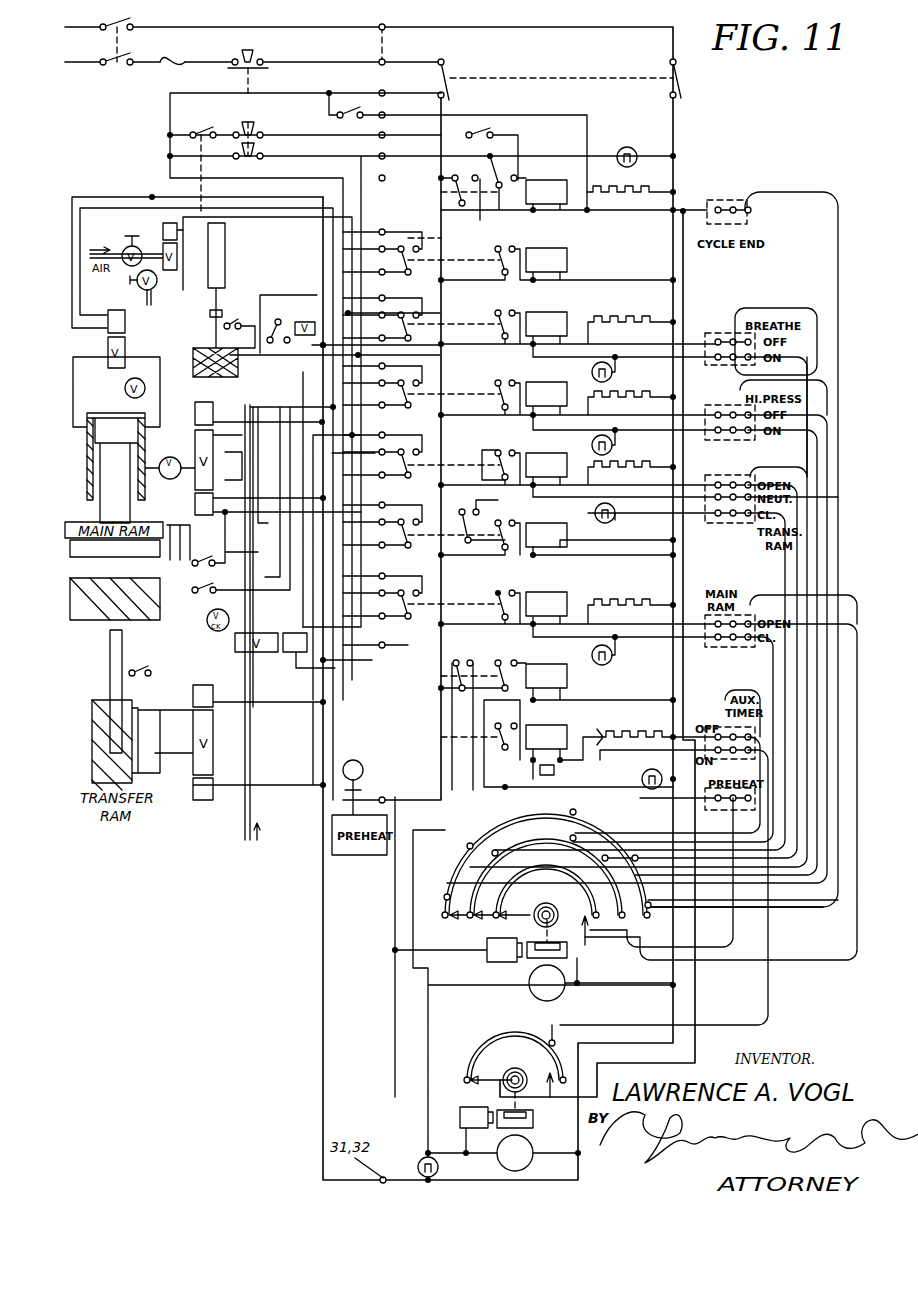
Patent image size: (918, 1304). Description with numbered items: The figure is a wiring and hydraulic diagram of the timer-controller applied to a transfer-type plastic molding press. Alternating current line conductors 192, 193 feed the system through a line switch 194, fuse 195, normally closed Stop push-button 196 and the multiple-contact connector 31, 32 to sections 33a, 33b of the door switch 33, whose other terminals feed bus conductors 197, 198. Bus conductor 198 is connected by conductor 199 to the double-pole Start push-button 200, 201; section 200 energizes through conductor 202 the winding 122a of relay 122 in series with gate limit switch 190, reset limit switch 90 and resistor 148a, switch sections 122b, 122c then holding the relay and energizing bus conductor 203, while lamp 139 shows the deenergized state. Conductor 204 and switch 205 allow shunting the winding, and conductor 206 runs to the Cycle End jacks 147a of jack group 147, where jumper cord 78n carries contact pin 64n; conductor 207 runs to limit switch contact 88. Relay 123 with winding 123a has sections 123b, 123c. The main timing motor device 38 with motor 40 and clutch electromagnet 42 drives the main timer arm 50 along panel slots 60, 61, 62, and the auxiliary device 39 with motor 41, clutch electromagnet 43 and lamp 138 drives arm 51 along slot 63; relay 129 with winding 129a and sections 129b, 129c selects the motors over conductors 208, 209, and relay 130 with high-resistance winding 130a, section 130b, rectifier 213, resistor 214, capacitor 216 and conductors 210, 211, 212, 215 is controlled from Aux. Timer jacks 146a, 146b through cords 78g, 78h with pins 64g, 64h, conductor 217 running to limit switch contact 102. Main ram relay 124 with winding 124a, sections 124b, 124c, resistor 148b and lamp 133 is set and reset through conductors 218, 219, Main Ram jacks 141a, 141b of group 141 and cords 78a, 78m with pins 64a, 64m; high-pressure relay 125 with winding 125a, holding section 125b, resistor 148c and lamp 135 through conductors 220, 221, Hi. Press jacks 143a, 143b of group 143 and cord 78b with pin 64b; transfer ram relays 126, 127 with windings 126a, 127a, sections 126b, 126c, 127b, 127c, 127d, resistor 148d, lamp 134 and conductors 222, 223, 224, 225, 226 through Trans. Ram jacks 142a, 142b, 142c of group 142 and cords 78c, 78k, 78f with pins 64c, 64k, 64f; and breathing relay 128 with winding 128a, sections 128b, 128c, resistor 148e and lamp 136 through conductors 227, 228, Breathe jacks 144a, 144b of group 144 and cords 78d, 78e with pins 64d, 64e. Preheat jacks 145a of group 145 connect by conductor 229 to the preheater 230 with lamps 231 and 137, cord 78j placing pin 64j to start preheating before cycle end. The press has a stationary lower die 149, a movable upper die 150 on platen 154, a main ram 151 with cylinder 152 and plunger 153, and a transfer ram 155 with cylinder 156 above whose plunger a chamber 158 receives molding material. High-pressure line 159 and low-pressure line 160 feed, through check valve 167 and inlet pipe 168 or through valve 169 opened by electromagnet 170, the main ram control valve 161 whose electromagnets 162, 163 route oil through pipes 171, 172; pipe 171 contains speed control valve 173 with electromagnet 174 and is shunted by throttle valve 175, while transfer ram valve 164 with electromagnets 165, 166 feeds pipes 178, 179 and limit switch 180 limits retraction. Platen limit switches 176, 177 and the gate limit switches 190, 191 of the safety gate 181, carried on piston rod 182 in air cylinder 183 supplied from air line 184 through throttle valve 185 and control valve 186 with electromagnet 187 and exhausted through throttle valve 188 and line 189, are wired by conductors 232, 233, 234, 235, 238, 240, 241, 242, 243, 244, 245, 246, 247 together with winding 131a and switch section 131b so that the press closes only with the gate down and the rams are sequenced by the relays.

The multiple-contact connector 31 is at (388, 42).
The multiple-contact connector 32 is at (382, 36).
The door switch 33 is at (602, 76).
The door switch section 33a is at (690, 70).
The door switch section 33b is at (452, 72).
The clutch-type timing motor device 38 is at (572, 958).
The clutch-type timing motor device 39 is at (540, 1124).
The electric motor 40 is at (566, 988).
The electric motor 41 is at (534, 1154).
The clutch electromagnet 42 is at (500, 962).
The clutch electromagnet 43 is at (460, 1120).
The timer arm 50 is at (524, 915).
The timer arm 51 is at (487, 1078).
The panel slot 60 is at (470, 832).
The panel slot 61 is at (495, 818).
The panel slot 62 is at (530, 840).
The panel slot 63 is at (478, 1044).
The contact pin 64a is at (496, 916).
The contact pin 64b is at (445, 915).
The contact pin 64c is at (447, 897).
The contact pin 64d is at (468, 848).
The contact pin 64e is at (493, 855).
The contact pin 64f is at (578, 812).
The contact pin 64g is at (572, 836).
The contact pin 64h is at (552, 1042).
The contact pin 64j is at (604, 858).
The contact pin 64k is at (635, 858).
The contact pin 64m is at (652, 830).
The contact pin 64n is at (648, 916).
The jumper cord 78a is at (772, 640).
The jumper cord 78b is at (775, 430).
The jumper cord 78c is at (755, 540).
The jumper cord 78d is at (796, 378).
The jumper cord 78e is at (722, 300).
The jumper cord 78f is at (846, 495).
The jumper cord 78g is at (770, 660).
The jumper cord 78h is at (748, 690).
The jumper cord 78j is at (742, 938).
The jumper cord 78k is at (798, 432).
The jumper cord 78m is at (772, 594).
The jumper cord 78n is at (800, 190).
The limit switch contact 88 is at (576, 935).
The reset limit switch 90 is at (500, 128).
The limit switch contact 102 is at (552, 1092).
The relay 122 is at (566, 180).
The relay winding 122a is at (560, 206).
The relay switch section 122b is at (500, 207).
The relay switch section 122c is at (452, 190).
The relay 123 is at (526, 250).
The relay winding 123a is at (567, 258).
The relay switch section 123b is at (498, 249).
The relay switch section 123c is at (416, 270).
The relay 124 is at (545, 592).
The relay winding 124a is at (574, 600).
The relay switch section 124b is at (498, 593).
The relay switch section 124c is at (420, 612).
The relay 125 is at (540, 384).
The relay winding 125a is at (580, 378).
The relay switch section 125b is at (498, 383).
The relay 126 is at (540, 454).
The relay winding 126a is at (568, 460).
The relay switch section 126b is at (498, 453).
The relay switch section 126c is at (416, 475).
The relay 127 is at (540, 540).
The relay winding 127a is at (567, 525).
The relay switch section 127b is at (505, 547).
The relay switch section 127c is at (462, 511).
The relay switch section 127d is at (420, 550).
The relay 128 is at (527, 312).
The relay winding 128a is at (567, 320).
The relay switch section 128b is at (498, 313).
The relay switch section 128c is at (416, 336).
The relay 129 is at (562, 666).
The relay winding 129a is at (567, 680).
The relay switch section 129b is at (498, 662).
The relay switch section 129c is at (458, 662).
The relay 130 is at (556, 728).
The relay winding 130a is at (567, 733).
The relay switch section 130b is at (533, 762).
The relay winding 131a is at (284, 318).
The relay switch section 131b is at (268, 330).
The indicator lamp 133 is at (612, 658).
The indicator lamp 134 is at (370, 480).
The indicator lamp 135 is at (613, 445).
The indicator lamp 136 is at (613, 372).
The indicator lamp 137 is at (304, 320).
The indicator lamp 138 is at (416, 1160).
The indicator lamp 139 is at (632, 146).
The jack group 141 is at (700, 612).
The jacks 141a is at (720, 640).
The jacks 141b is at (738, 620).
The jack group 142 is at (730, 520).
The jacks 142a is at (726, 550).
The jacks 142b is at (718, 484).
The jacks 142c is at (718, 514).
The jack group 143 is at (716, 414).
The jacks 143a is at (718, 432).
The jacks 143b is at (735, 414).
The jack group 144 is at (715, 340).
The jacks 144a is at (715, 362).
The jacks 144b is at (735, 340).
The jack group 145 is at (748, 800).
The jacks 145a is at (718, 800).
The jacks 146a is at (720, 735).
The jack 146b is at (725, 745).
The jack group 147 is at (707, 200).
The jacks 147a is at (733, 205).
The current-limiting resistor 148a is at (630, 188).
The current-limiting resistor 148b is at (640, 600).
The current-limiting resistor 148c is at (632, 398).
The current-limiting resistor 148d is at (640, 468).
The current-limiting resistor 148e is at (632, 322).
The stationary lower die 149 is at (140, 618).
The upper die 150 is at (85, 558).
The main ram 151 is at (88, 452).
The hydraulic cylinder 152 is at (95, 460).
The plunger 153 is at (100, 484).
The platen 154 is at (95, 500).
The transfer ram 155 is at (92, 770).
The hydraulic cylinder 156 is at (93, 738).
The chamber 158 is at (90, 620).
The high-pressure supply line 159 is at (240, 838).
The low-pressure supply line 160 is at (196, 640).
The four-way three-position valve 161 is at (195, 436).
The actuating electromagnet 162 is at (195, 412).
The actuating electromagnet 163 is at (225, 514).
The valve 164 is at (213, 720).
The actuating electromagnet 165 is at (205, 800).
The actuating electromagnet 166 is at (213, 694).
The check valve 167 is at (206, 620).
The inlet pipe 168 is at (232, 452).
The two-position valve 169 is at (258, 652).
The electromagnet 170 is at (296, 668).
The pipe 171 is at (158, 384).
The pipe 172 is at (195, 505).
The two-position valve 173 is at (125, 345).
The electromagnet 174 is at (125, 320).
The throttle valve 175 is at (95, 580).
The limit switch 176 is at (200, 562).
The limit switch 177 is at (196, 588).
The pipe 178 is at (175, 753).
The pipe 179 is at (175, 726).
The limit switch 180 is at (148, 672).
The safety gate 181 is at (193, 352).
The piston rod 182 is at (210, 315).
The air cylinder 183 is at (226, 234).
The air line 184 is at (100, 248).
The throttle valve 185 is at (130, 244).
The three-way two-position control valve 186 is at (165, 280).
The electromagnet 187 is at (185, 232).
The throttle valve 188 is at (130, 280).
The exhaust line 189 is at (140, 298).
The limit switch 190 is at (198, 128).
The limit switch 191 is at (236, 320).
The line conductor 192 is at (78, 30).
The line conductor 193 is at (78, 66).
The line switch 194 is at (117, 66).
The fuse 195 is at (173, 62).
The Stop push-button switch 196 is at (262, 54).
The bus conductor 197 is at (690, 128).
The bus conductor 198 is at (450, 104).
The conductor 199 is at (296, 93).
The Start push-button switch section 200 is at (262, 126).
The Start push-button switch section 201 is at (262, 150).
The conductor 202 is at (335, 147).
The bus conductor 203 is at (440, 222).
The conductor 204 is at (587, 114).
The switch 205 is at (343, 93).
The conductor 206 is at (650, 228).
The conductor 207 is at (673, 260).
The conductor 208 is at (452, 720).
The conductor 209 is at (473, 742).
The conductor 210 is at (484, 760).
The conductor 211 is at (497, 724).
The conductor 212 is at (615, 786).
The rectifier 213 is at (600, 740).
The current-limiting resistor 214 is at (632, 730).
The conductor 215 is at (636, 700).
The filter capacitor 216 is at (555, 770).
The conductor 217 is at (700, 1043).
The conductor 218 is at (660, 690).
The conductor 219 is at (595, 600).
The conductor 220 is at (532, 430).
The conductor 221 is at (650, 414).
The conductor 222 is at (606, 482).
The conductor 223 is at (665, 538).
The conductor 224 is at (665, 554).
The conductor 225 is at (482, 466).
The conductor 226 is at (520, 494).
The conductor 227 is at (532, 357).
The conductor 228 is at (640, 306).
The conductor 229 is at (428, 796).
The electronic preheater 230 is at (360, 856).
The indicator lamp 231 is at (353, 760).
The conductor 232 is at (392, 208).
The conductor 233 is at (400, 214).
The conductor 234 is at (272, 272).
The conductor 235 is at (398, 506).
The conductor 238 is at (258, 518).
The conductor 240 is at (290, 572).
The conductor 241 is at (112, 197).
The conductor 242 is at (225, 542).
The conductor 243 is at (250, 272).
The conductor 244 is at (290, 628).
The conductor 245 is at (285, 785).
The conductor 246 is at (175, 684).
The conductor 247 is at (340, 664).